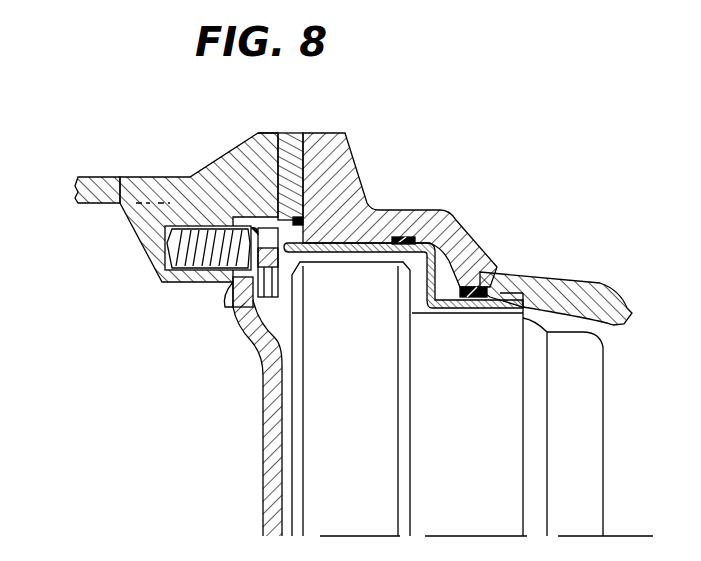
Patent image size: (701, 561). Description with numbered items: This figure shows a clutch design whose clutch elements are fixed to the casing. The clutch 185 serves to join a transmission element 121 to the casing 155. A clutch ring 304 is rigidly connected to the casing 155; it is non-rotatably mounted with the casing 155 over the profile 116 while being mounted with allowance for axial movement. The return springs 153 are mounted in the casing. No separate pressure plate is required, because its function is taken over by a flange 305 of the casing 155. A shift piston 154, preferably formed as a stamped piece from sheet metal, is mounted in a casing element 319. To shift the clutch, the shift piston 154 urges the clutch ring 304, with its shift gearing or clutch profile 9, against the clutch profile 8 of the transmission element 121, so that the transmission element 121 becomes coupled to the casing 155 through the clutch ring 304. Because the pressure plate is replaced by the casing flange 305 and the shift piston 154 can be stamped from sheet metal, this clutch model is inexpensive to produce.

The casing 155 is at (103, 187).
The return springs 153 is at (198, 227).
The clutch 185 is at (241, 172).
The profile 116 is at (273, 218).
The clutch ring 304 is at (343, 203).
The casing element 319 is at (385, 213).
The shift piston 154 is at (480, 267).
The clutch profile 9 is at (258, 287).
The clutch profile 8 is at (233, 283).
The flange 305 is at (222, 323).
The transmission element 121 is at (261, 372).